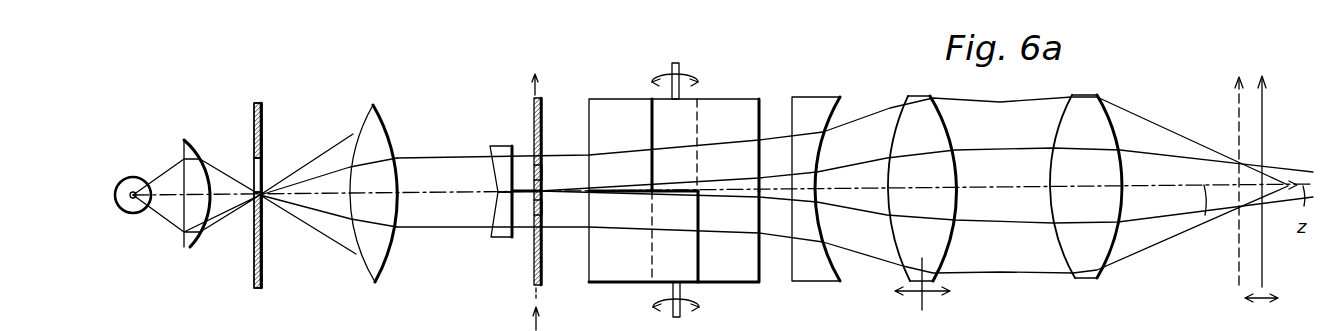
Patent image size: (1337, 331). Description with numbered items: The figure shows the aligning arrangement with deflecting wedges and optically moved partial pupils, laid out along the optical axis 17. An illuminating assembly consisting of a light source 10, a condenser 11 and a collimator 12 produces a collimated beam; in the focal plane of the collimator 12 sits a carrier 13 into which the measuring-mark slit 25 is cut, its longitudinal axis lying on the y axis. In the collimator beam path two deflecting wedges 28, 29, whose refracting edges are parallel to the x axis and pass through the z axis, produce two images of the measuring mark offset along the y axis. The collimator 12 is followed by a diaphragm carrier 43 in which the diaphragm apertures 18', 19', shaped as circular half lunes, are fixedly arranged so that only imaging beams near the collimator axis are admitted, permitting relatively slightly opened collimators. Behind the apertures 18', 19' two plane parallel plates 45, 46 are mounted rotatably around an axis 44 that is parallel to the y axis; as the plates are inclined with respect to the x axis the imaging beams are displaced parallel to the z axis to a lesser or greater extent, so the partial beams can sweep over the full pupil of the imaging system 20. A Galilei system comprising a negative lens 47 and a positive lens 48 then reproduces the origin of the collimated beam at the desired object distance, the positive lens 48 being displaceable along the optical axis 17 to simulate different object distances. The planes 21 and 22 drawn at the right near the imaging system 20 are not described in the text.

The light source 10 is at (133, 209).
The condenser 11 is at (188, 244).
The carrier 13 is at (263, 262).
The slit 25 is at (263, 177).
The collimator 12 is at (377, 254).
The deflecting wedge 28 is at (502, 172).
The deflecting wedge 29 is at (503, 207).
The diaphragm carrier 43 is at (544, 110).
The diaphragm aperture 18' is at (516, 145).
The diaphragm aperture 19' is at (514, 241).
The plane parallel plate 46 is at (722, 115).
The plane parallel plate 45 is at (744, 263).
The axis of rotation 44 is at (674, 63).
The negative lens 47 is at (815, 272).
The positive lens 48 is at (937, 250).
The imaging system 20 is at (1083, 262).
The optical axis 17 is at (1205, 215).
The reference plane 21 is at (1238, 115).
The image plane 22 is at (1263, 115).